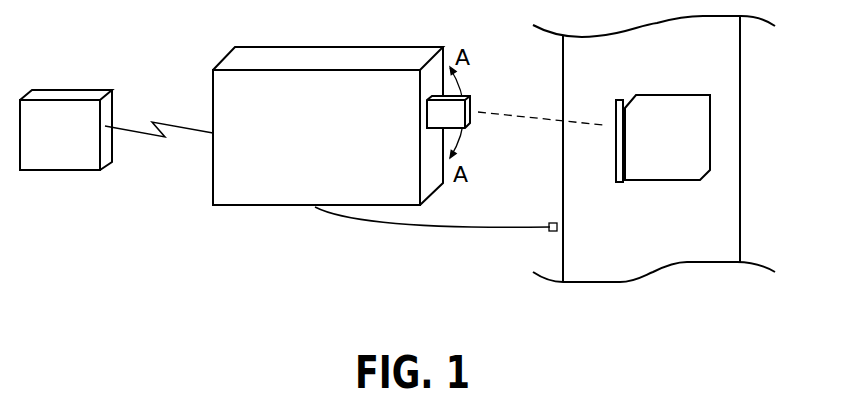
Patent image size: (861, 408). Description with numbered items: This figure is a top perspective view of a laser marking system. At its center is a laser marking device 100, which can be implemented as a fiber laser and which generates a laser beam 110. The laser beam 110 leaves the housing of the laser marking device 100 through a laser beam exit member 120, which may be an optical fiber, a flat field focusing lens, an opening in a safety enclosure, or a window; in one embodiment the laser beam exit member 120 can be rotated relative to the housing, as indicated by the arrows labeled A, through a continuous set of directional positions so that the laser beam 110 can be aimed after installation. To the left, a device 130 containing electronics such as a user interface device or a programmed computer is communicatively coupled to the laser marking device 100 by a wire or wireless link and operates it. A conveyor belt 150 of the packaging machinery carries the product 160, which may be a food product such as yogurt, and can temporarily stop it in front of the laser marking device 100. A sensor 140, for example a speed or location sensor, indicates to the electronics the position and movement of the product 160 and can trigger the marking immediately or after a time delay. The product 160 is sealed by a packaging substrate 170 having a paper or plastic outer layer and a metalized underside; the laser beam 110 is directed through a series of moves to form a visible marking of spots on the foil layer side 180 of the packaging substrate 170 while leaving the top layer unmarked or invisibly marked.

The laser marking device 100 is at (338, 46).
The laser beam 110 is at (480, 112).
The laser beam exit member 120 is at (468, 101).
The device 130 is at (88, 87).
The sensor 140 is at (547, 232).
The conveyor belt 150 is at (740, 78).
The product 160 is at (680, 182).
The packaging substrate 170 is at (617, 118).
The foil layer side 180 is at (625, 168).